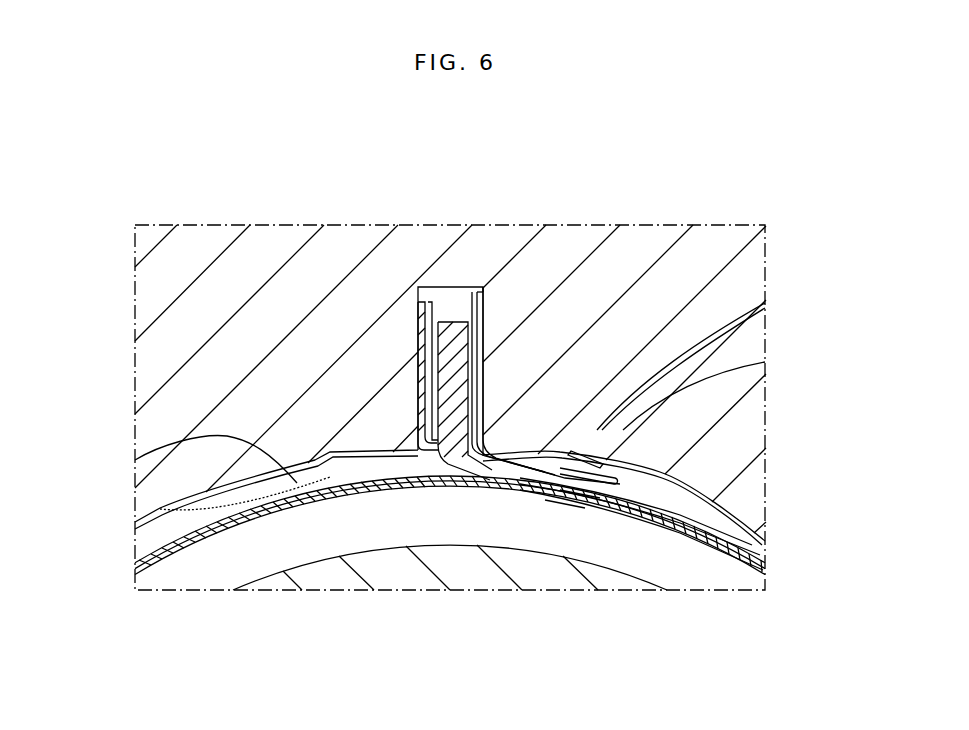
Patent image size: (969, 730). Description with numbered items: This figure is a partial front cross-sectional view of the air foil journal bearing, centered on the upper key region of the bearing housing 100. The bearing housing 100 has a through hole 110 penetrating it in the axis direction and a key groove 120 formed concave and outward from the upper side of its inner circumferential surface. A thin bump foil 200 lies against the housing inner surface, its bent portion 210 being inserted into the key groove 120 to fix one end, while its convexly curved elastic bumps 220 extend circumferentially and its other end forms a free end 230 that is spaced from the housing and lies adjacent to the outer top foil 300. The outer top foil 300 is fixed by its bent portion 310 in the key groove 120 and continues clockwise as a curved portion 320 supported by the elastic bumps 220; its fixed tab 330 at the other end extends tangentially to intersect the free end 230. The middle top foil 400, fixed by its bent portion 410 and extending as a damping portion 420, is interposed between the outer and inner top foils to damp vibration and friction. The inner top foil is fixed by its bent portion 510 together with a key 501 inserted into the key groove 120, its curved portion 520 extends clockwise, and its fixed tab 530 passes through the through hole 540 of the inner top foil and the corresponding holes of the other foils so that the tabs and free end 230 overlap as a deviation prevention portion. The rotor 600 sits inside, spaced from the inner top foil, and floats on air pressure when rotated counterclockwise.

The bearing housing 100 is at (210, 365).
The through hole 110 is at (265, 543).
The key groove 120 is at (434, 318).
The bump foil 200 is at (330, 452).
The bent portion 210 is at (418, 300).
The elastic bump 220 is at (135, 461).
The free end 230 is at (570, 465).
The outer top foil 300 is at (485, 290).
The bent portion 310 is at (568, 152).
The curved portion 320 is at (752, 545).
The fixed tab 330 is at (607, 475).
The middle top foil 400 is at (483, 288).
The bent portion 410 is at (517, 150).
The damping portion 420 is at (760, 553).
The key 501 is at (432, 290).
The bent portion 510 is at (452, 320).
The curved portion 520 is at (763, 556).
The fixed tab 530 is at (598, 497).
The through hole 540 is at (572, 504).
The rotor 600 is at (467, 567).